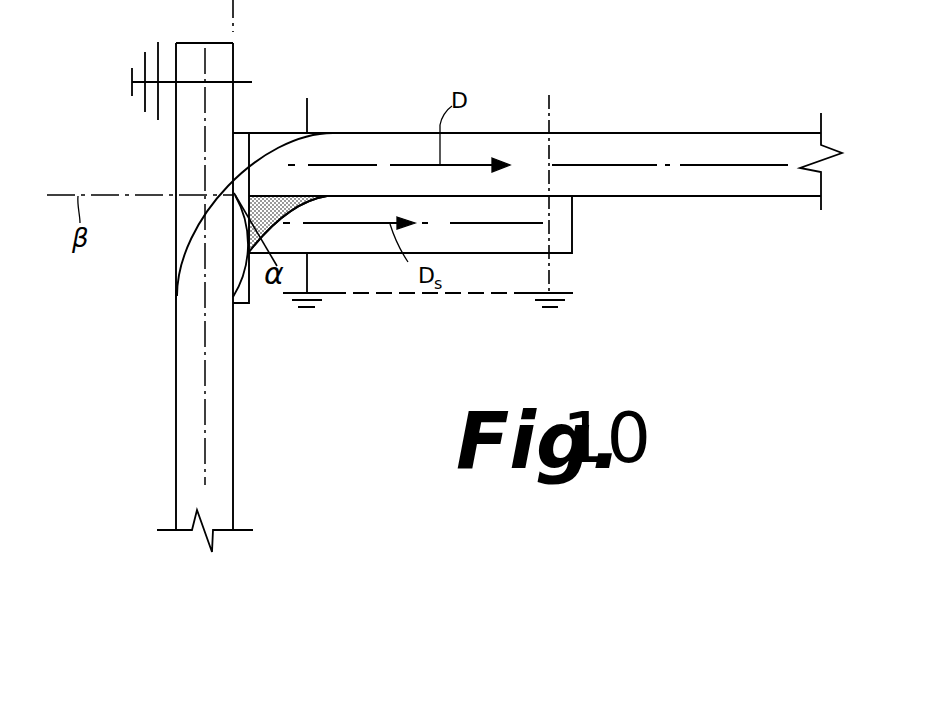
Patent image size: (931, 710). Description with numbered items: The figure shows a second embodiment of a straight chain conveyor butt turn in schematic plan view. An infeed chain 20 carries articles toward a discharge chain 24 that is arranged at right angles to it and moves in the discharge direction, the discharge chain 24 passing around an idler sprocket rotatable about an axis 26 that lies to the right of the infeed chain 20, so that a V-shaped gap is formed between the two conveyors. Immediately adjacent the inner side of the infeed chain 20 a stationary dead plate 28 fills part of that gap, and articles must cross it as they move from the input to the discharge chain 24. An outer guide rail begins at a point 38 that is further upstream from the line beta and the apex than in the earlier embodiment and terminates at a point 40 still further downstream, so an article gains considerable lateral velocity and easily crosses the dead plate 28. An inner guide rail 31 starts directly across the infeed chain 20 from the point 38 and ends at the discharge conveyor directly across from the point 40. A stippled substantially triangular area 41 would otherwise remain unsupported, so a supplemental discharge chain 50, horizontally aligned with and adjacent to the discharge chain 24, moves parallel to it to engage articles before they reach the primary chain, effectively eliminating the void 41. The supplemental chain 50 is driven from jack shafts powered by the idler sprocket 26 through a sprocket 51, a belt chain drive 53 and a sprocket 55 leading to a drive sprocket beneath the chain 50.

The infeed chain 20 is at (217, 437).
The discharge chain 24 is at (645, 142).
The axis of idler sprocket 26 is at (310, 100).
The dead plate 28 is at (247, 306).
The inner guide rail 31 is at (310, 206).
The starting point of guide rail 38 is at (177, 297).
The terminating point of guide rail 40 is at (333, 132).
The triangular area 41 is at (272, 225).
The supplemental discharge chain 50 is at (562, 240).
The sprocket 51 is at (322, 307).
The belt chain drive 53 is at (465, 293).
The sprocket 55 is at (553, 312).